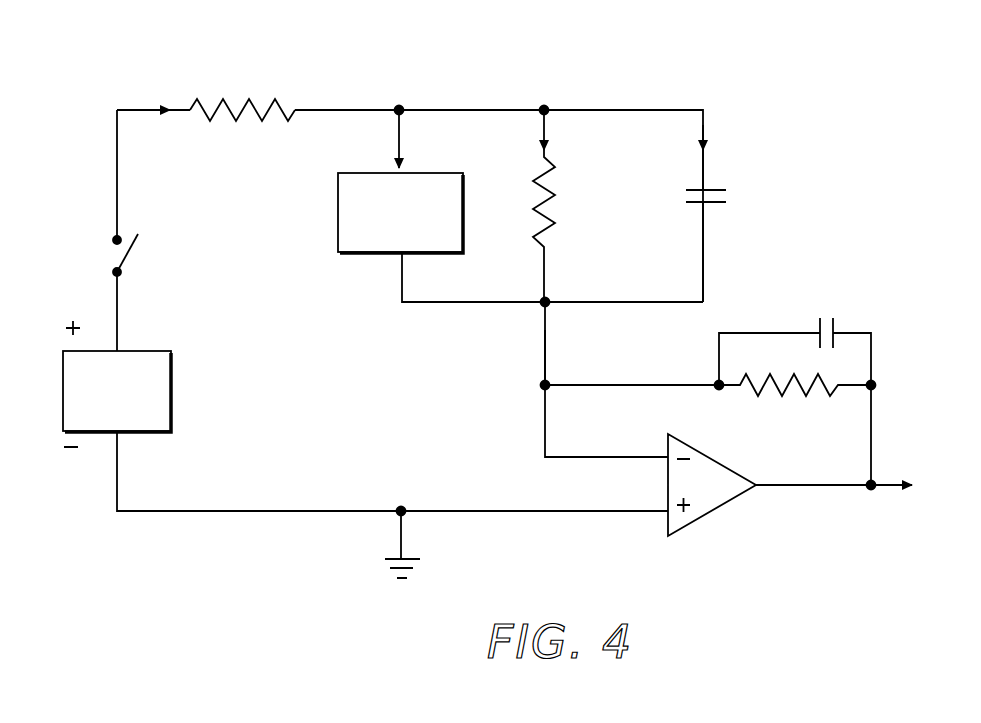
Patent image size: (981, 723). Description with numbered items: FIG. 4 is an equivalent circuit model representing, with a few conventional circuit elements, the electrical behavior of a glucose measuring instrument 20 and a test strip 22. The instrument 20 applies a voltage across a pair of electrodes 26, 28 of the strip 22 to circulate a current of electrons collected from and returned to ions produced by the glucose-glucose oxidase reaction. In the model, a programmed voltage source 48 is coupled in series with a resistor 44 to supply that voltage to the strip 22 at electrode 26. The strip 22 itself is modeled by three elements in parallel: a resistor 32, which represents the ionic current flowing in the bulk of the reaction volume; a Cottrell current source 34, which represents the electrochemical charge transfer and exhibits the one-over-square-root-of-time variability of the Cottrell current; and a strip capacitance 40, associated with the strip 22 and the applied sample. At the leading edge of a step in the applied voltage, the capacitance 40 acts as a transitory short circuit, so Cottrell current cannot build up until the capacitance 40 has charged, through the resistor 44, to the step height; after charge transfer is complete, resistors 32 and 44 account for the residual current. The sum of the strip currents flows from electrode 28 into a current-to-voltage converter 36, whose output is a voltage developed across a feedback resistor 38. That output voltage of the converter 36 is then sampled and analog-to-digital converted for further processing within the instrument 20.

The instrument 20 is at (74, 174).
The strip 22 is at (680, 88).
The electrode 26 is at (345, 109).
The electrode 28 is at (545, 353).
The resistor 32 is at (553, 210).
The Cottrell current source 34 is at (338, 232).
The current-to-voltage converter 36 is at (718, 503).
The feedback resistor 38 is at (805, 395).
The strip capacitance 40 is at (718, 184).
The resistor 44 is at (241, 107).
The programmed voltage source 48 is at (173, 384).